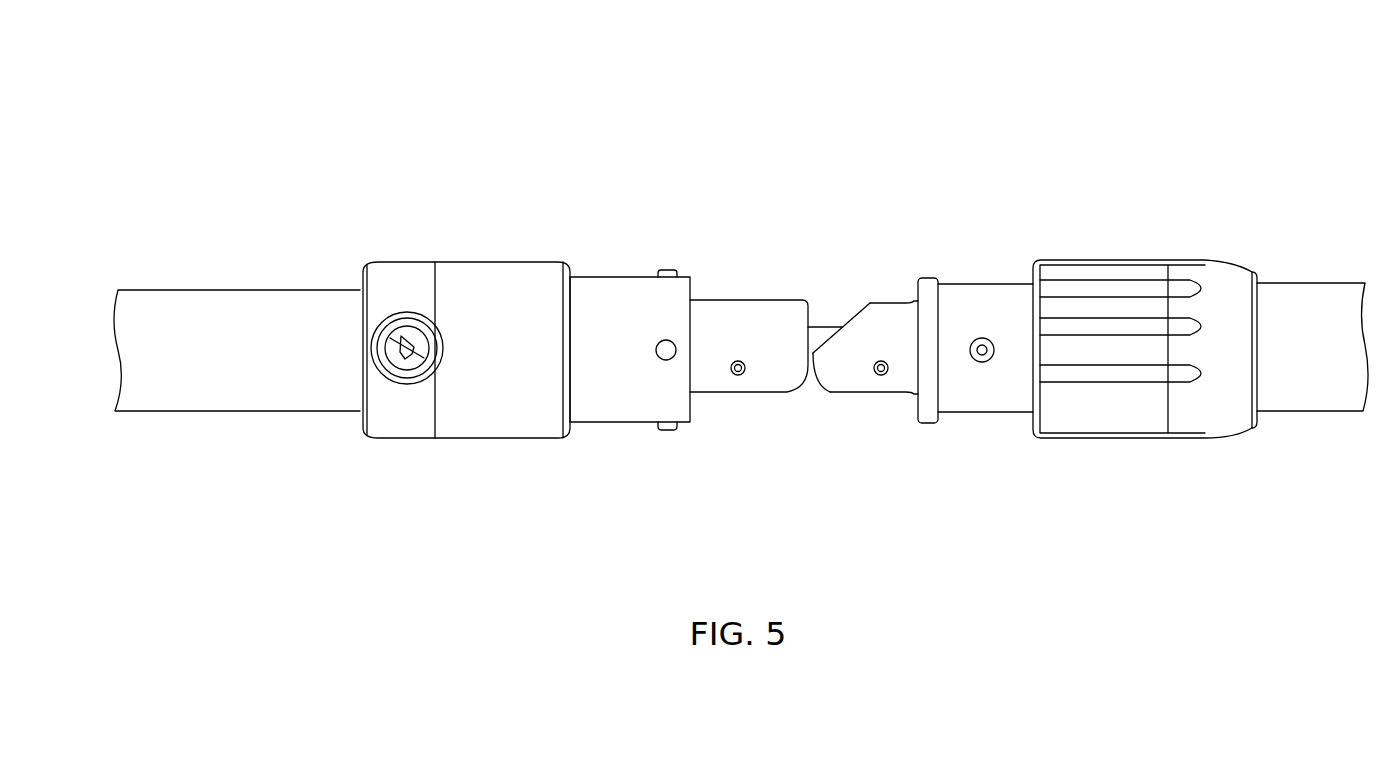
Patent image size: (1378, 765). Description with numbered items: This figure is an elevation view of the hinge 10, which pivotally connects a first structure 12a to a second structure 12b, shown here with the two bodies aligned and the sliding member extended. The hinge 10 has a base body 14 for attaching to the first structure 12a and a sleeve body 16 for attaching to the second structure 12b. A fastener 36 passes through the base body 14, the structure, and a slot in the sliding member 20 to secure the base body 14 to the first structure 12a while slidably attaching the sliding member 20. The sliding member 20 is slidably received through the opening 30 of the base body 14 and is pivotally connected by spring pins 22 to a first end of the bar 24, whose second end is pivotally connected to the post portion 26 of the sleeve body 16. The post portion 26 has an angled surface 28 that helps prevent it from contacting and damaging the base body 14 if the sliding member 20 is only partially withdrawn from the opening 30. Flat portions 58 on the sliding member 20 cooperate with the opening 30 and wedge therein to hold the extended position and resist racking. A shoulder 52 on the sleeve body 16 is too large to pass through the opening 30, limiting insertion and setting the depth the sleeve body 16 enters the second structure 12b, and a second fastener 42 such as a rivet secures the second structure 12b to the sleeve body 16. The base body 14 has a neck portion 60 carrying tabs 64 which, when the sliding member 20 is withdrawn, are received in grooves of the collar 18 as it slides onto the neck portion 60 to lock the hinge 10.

The hinge 10 is at (912, 97).
The first structure 12a is at (268, 395).
The second structure 12b is at (1312, 403).
The base body 14 is at (475, 490).
The sleeve body 16 is at (1171, 492).
The collar 18 is at (1137, 270).
The sliding member 20 is at (755, 315).
The spring pins 22 is at (743, 376).
The bar 24 is at (823, 327).
The post portion 26 is at (895, 310).
The angled surface 28 is at (835, 305).
The opening 30 is at (708, 418).
The fastener 36 is at (405, 338).
The second fastener 42 is at (982, 362).
The shoulder 52 is at (930, 287).
The flat portions 58 is at (728, 352).
The neck portion 60 is at (620, 408).
The tabs 64 is at (666, 343).